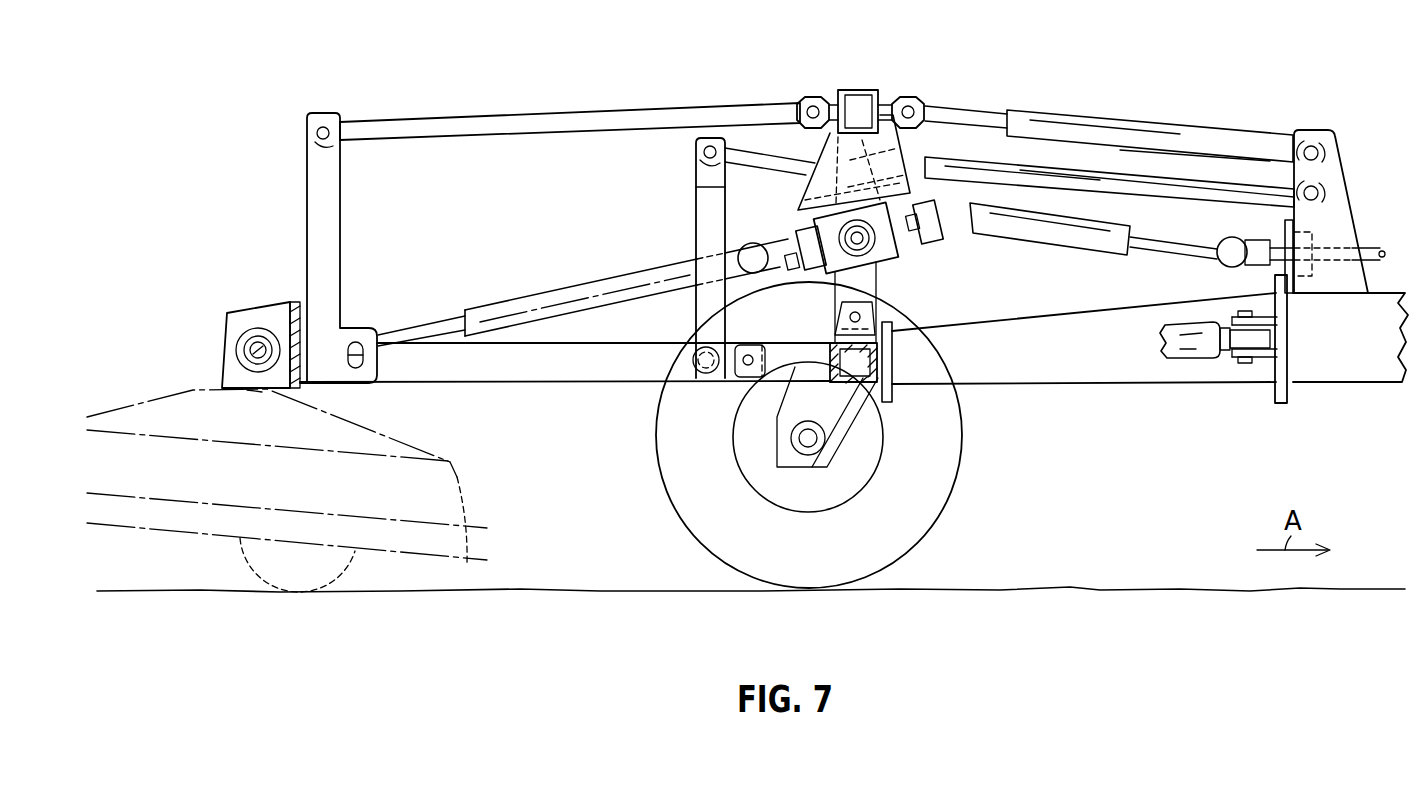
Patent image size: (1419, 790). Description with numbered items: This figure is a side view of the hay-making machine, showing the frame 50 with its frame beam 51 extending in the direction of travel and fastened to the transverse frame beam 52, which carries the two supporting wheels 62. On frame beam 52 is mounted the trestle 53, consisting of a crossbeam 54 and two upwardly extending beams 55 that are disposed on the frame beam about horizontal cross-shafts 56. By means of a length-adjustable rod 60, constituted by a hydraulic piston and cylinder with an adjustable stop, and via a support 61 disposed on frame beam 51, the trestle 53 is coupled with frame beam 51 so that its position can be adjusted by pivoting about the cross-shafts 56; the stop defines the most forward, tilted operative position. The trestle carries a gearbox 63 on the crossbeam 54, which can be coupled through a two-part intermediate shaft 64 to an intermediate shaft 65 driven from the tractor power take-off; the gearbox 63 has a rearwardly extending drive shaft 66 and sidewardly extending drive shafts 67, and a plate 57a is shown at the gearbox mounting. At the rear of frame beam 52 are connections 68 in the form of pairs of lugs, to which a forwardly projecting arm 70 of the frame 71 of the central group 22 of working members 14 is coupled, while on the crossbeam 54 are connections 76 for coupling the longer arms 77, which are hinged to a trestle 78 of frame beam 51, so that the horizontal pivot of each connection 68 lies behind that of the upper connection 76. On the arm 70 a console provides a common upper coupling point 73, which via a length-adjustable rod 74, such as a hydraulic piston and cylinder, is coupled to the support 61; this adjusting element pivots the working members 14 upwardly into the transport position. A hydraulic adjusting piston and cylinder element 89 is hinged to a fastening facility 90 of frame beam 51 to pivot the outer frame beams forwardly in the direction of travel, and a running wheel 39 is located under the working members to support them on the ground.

The working members 14 is at (187, 547).
The central group 22 is at (473, 465).
The running wheel 39 is at (292, 590).
The frame 50 is at (1373, 376).
The frame beam 51 is at (1327, 364).
The frame beam 52 is at (892, 350).
The trestle 53 is at (834, 297).
The crossbeam 54 is at (860, 90).
The beams 55 is at (914, 144).
The cross-shafts 56 is at (872, 314).
The plate 57a is at (804, 179).
The rod 60 is at (1110, 126).
The support 61 is at (1346, 172).
The supporting wheels 62 is at (942, 471).
The gearbox 63 is at (826, 283).
The intermediate shaft 64 is at (1377, 248).
The intermediate shaft 65 is at (1067, 239).
The drive shaft 66 is at (798, 231).
The drive shafts 67 is at (871, 249).
The connections 68 is at (753, 378).
The arm 70 is at (553, 372).
The frame 71 is at (208, 332).
The upper coupling point 73 is at (688, 199).
The rod 74 is at (1163, 184).
The connections 76 is at (823, 98).
The arms 77 is at (565, 115).
The trestle 78 is at (348, 231).
The hydraulic adjusting piston and cylinder element 89 is at (1162, 340).
The fastening facility 90 is at (1265, 360).